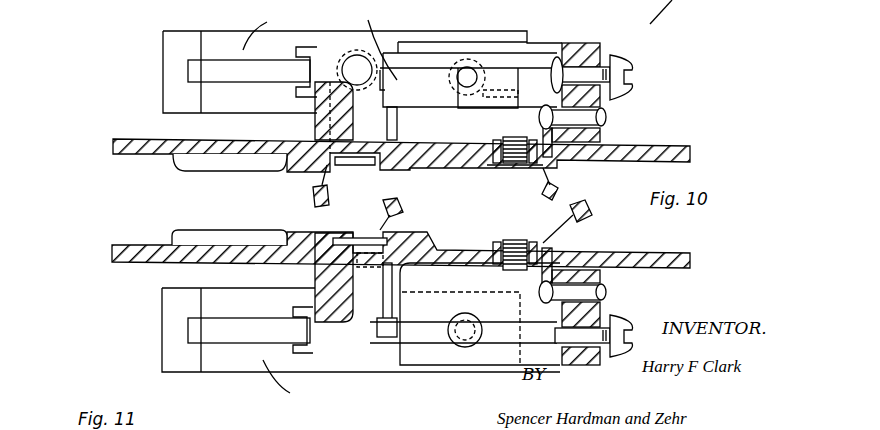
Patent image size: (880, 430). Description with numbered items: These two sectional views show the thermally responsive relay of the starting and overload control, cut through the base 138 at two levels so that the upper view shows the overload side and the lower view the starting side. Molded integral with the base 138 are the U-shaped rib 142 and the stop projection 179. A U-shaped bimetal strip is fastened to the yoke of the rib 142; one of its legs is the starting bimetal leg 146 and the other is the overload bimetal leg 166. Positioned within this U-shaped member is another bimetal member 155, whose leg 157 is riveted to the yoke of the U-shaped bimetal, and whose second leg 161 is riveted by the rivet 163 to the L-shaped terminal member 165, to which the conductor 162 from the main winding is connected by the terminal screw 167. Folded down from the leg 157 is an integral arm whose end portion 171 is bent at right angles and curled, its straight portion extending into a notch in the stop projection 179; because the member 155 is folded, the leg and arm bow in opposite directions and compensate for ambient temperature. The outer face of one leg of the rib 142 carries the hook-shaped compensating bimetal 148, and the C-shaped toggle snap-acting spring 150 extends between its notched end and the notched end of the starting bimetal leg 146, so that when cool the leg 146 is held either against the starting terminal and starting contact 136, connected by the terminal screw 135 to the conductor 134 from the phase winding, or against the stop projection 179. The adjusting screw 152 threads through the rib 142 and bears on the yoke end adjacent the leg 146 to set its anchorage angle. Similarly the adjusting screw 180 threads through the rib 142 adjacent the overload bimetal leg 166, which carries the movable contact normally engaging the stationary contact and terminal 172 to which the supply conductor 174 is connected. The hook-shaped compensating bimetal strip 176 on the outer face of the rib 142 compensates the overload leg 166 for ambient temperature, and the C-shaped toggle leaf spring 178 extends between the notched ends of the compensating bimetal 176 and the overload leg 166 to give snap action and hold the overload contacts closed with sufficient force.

In FIG. 10, the hook-shaped compensating bimetal strip 176 is at (172, 45).
In FIG. 10, the C-shaped toggle leaf spring 178 is at (212, 70).
In FIG. 10, the overload bimetal leg 166 is at (440, 60).
In FIG. 10, the leg 157 is at (535, 80).
In FIG. 10, the U-shaped rib 142 is at (600, 43).
In FIG. 11, the U-shaped rib 142 is at (603, 310).
In FIG. 10, the adjusting screw 180 is at (623, 67).
In FIG. 10, the bimetal member 155 is at (437, 102).
In FIG. 10, the rivet 163 is at (605, 118).
In FIG. 11, the rivet 163 is at (605, 288).
In FIG. 10, the stop projection 179 is at (315, 117).
In FIG. 11, the stop projection 179 is at (315, 277).
In FIG. 10, the stationary contact and terminal 172 is at (373, 128).
In FIG. 10, the second leg 161 is at (525, 108).
In FIG. 10, the base 138 is at (113, 147).
In FIG. 11, the base 138 is at (112, 250).
In FIG. 10, the supply conductor 174 is at (315, 190).
In FIG. 10, the terminal screw 167 is at (513, 167).
In FIG. 11, the terminal screw 167 is at (533, 222).
In FIG. 10, the L-shaped terminal member 165 is at (550, 167).
In FIG. 11, the L-shaped terminal member 165 is at (483, 238).
In FIG. 10, the conductor 162 is at (557, 193).
In FIG. 11, the conductor 162 is at (572, 222).
In FIG. 11, the compensating bimetal 148 is at (177, 300).
In FIG. 11, the C-shaped toggle snap-acting spring 150 is at (197, 328).
In FIG. 11, the terminal screw 135 is at (347, 243).
In FIG. 11, the conductor 134 is at (403, 214).
In FIG. 11, the starting terminal and starting contact 136 is at (373, 283).
In FIG. 11, the end portion 171 is at (397, 322).
In FIG. 11, the adjusting screw 152 is at (620, 322).
In FIG. 11, the starting bimetal leg 146 is at (437, 333).